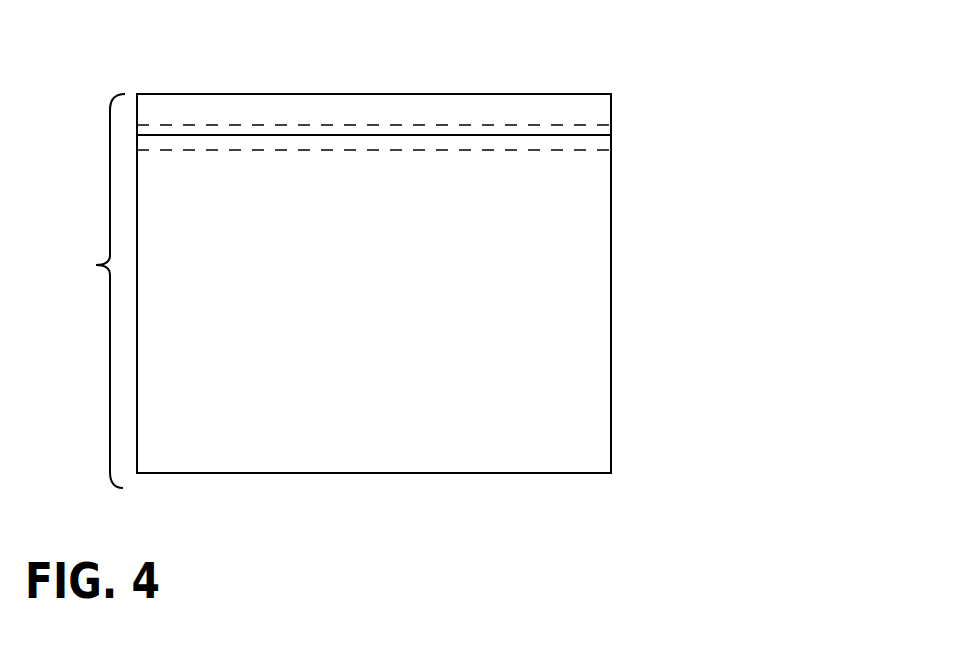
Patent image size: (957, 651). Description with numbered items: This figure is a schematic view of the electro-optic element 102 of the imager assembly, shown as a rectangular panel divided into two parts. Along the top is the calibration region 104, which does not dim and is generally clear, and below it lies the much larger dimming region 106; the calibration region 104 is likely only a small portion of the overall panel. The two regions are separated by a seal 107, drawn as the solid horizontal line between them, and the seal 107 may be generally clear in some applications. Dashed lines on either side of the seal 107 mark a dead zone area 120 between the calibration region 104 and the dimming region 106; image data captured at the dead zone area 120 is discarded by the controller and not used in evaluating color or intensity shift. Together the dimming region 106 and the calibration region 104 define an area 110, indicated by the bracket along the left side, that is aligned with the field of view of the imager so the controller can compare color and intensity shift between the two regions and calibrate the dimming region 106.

The electro-optic element 102 is at (612, 357).
The calibration region 104 is at (520, 109).
The dimming region 106 is at (563, 272).
The seal 107 is at (526, 136).
The area 110 is at (87, 291).
The dead zone area 120 is at (173, 130).